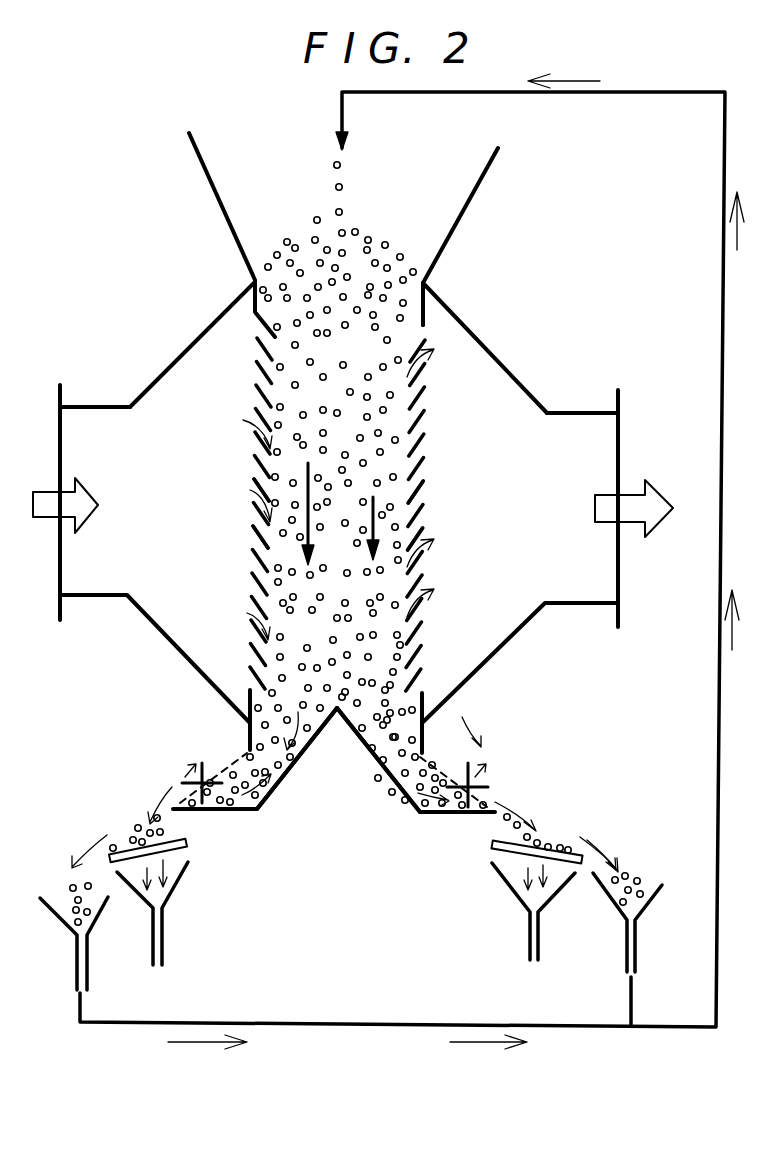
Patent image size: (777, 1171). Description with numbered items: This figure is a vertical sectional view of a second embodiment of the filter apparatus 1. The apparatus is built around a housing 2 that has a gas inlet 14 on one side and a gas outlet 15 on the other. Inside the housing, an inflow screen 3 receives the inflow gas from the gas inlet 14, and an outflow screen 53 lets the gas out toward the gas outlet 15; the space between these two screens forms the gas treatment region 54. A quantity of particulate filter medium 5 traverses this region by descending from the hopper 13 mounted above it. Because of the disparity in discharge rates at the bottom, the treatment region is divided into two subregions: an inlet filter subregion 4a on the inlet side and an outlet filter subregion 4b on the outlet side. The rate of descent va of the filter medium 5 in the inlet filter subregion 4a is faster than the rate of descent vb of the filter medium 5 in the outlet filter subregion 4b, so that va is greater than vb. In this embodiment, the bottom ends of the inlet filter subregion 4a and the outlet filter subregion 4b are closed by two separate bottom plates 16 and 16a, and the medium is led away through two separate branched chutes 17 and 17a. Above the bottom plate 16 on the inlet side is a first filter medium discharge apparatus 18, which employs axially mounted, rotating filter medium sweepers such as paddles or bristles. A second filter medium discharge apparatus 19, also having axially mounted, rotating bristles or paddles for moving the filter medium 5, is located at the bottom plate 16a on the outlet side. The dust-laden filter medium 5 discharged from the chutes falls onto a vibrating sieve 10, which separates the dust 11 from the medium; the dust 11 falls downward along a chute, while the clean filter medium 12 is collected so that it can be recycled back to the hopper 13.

The filter apparatus 1 is at (397, 561).
The housing 2 is at (353, 500).
The inflow screen 3 is at (238, 473).
The inlet filter subregion 4a is at (256, 513).
The outlet filter subregion 4b is at (440, 515).
The particulate filter medium 5 is at (338, 551).
The vibrating sieve 10 is at (351, 823).
The dust 11 is at (346, 912).
The clean filter medium 12 is at (350, 912).
The hopper 13 is at (326, 235).
The gas inlet 14 is at (95, 368).
The gas outlet 15 is at (582, 391).
The bottom plate 16 is at (255, 786).
The bottom plate 16a is at (416, 786).
The branched chute 17 is at (297, 758).
The branched chute 17a is at (378, 760).
The first filter medium discharge apparatus 18 is at (185, 769).
The second filter medium discharge apparatus 19 is at (491, 773).
The outflow screen 53 is at (439, 476).
The gas treatment region 54 is at (453, 287).
The rate of descent va is at (260, 534).
The rate of descent vb is at (437, 525).